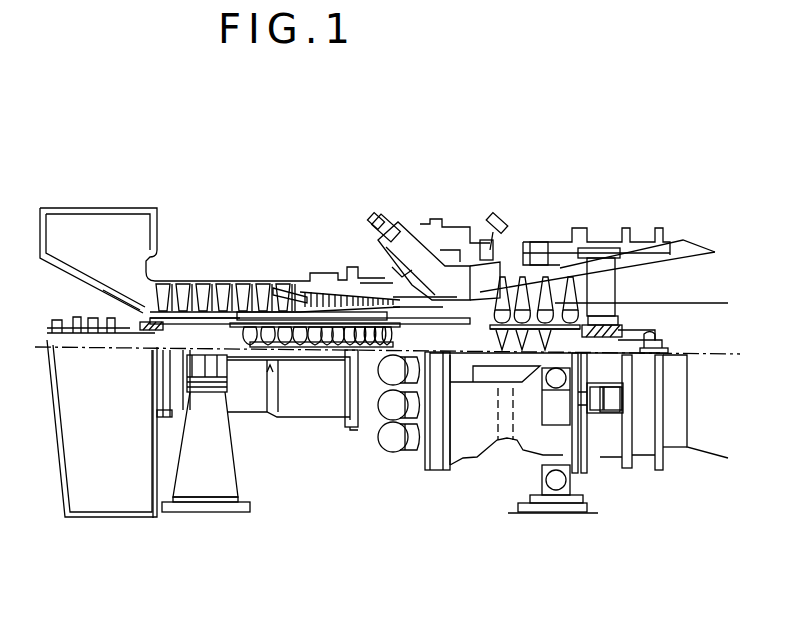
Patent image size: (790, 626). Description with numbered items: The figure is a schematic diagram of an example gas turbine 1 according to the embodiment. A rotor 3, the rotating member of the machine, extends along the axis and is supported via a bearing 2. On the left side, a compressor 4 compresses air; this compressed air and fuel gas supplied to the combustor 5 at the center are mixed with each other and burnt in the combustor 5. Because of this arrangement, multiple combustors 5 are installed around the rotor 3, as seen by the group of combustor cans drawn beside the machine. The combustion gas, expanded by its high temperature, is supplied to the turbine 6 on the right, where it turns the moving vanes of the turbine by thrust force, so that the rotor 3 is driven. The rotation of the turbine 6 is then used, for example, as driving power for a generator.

The gas turbine 1 is at (202, 270).
The rotor 2 is at (595, 342).
The rotor 3 is at (643, 347).
The compressor 4 is at (265, 268).
The combustor 5 is at (384, 222).
The turbine 6 is at (513, 272).